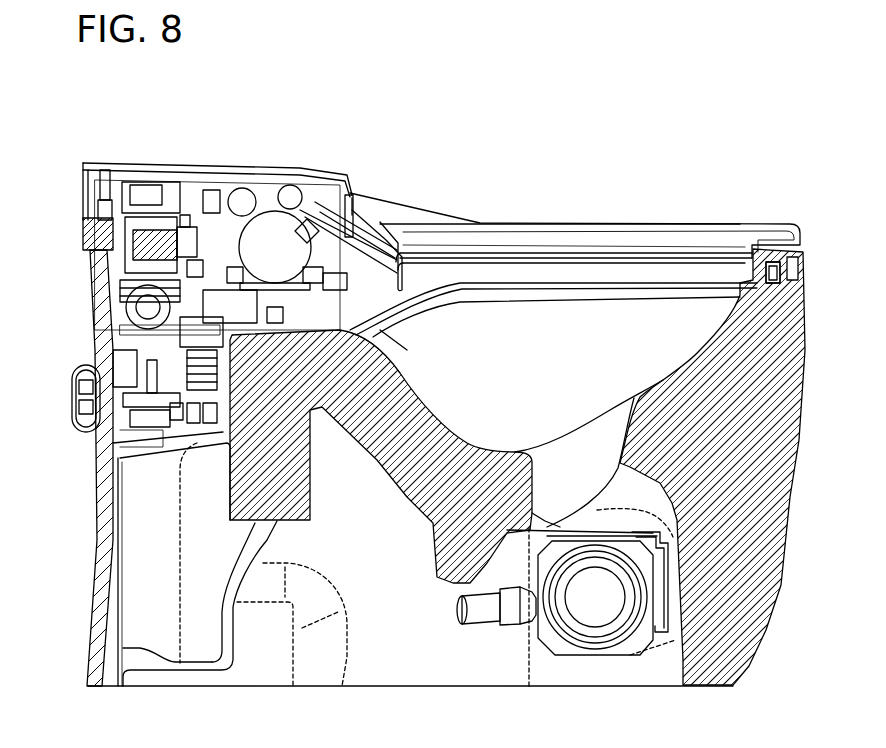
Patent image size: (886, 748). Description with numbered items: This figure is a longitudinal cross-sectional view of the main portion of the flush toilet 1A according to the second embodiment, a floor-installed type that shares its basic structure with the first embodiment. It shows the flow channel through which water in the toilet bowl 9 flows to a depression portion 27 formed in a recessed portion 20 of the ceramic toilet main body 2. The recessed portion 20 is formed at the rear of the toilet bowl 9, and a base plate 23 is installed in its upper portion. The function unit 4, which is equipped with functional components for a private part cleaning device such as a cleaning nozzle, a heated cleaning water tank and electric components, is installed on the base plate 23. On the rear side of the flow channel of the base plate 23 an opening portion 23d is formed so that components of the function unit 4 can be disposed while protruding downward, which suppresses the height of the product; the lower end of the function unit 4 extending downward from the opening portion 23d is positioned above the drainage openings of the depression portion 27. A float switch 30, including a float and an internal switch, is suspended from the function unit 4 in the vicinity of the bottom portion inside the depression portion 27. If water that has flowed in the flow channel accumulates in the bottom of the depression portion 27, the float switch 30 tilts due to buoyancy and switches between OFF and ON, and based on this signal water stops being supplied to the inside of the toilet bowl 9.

The flush toilet 1A is at (516, 163).
The toilet main body 2 is at (795, 470).
The function unit 4 is at (220, 337).
The toilet bowl 9 is at (693, 270).
The recessed portion 20 is at (285, 312).
The base plate 23 is at (215, 345).
The opening portion 23d is at (213, 323).
The depression portion 27 is at (103, 413).
The float switch 30 is at (168, 424).